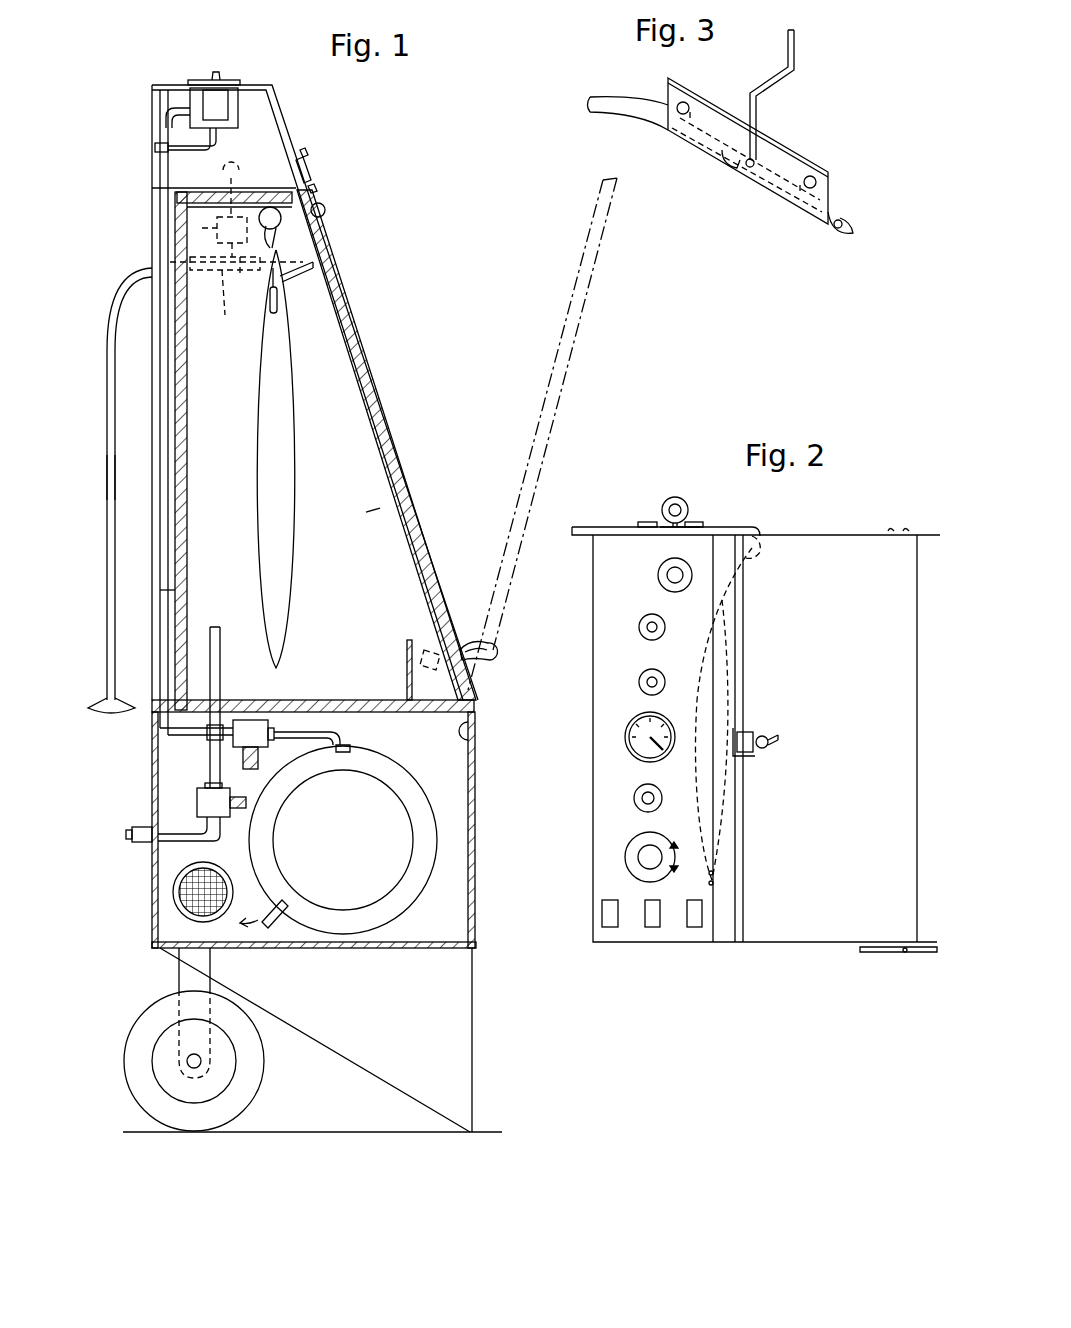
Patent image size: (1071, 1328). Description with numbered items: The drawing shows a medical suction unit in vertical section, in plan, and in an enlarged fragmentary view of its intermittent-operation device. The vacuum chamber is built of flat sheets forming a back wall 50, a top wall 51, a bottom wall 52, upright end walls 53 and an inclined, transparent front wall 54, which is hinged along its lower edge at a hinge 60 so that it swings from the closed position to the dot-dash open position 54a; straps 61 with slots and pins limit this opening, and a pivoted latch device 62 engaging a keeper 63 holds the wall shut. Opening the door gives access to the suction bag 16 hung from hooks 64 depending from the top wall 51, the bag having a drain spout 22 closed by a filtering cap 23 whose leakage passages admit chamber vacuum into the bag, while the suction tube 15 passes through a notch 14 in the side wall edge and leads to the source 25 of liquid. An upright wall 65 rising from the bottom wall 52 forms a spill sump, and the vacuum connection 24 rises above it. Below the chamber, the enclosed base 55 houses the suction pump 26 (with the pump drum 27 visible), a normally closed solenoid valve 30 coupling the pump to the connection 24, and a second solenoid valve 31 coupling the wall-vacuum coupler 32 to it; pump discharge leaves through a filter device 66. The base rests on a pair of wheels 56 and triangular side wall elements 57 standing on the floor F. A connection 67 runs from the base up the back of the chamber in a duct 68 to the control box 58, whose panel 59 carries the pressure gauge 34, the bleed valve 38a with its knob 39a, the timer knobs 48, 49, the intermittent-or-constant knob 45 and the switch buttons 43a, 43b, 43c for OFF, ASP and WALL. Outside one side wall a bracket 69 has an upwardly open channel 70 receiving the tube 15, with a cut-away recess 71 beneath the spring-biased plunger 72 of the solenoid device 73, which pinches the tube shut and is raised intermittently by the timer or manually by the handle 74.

In FIG. 1, the notch 14 is at (313, 267).
In FIG. 1, the suction tube 15 is at (115, 462).
In FIG. 2, the suction tube 15 is at (745, 530).
In FIG. 3, the suction tube 15 is at (633, 98).
In FIG. 1, the suction bag 16 is at (287, 460).
In FIG. 2, the suction bag 16 is at (730, 652).
In FIG. 2, the drain spout 22 is at (712, 873).
In FIG. 1, the cap 23 is at (280, 305).
In FIG. 2, the cap 23 is at (712, 883).
In FIG. 1, the vacuum connection 24 is at (222, 690).
In FIG. 1, the source of liquid 25 is at (112, 715).
In FIG. 1, the suction pump 26 is at (425, 840).
In FIG. 1, the drum 27 is at (437, 885).
In FIG. 1, the solenoid operated valve 30 is at (268, 747).
In FIG. 1, the solenoid operated valve 31 is at (197, 803).
In FIG. 1, the coupler 32 is at (140, 842).
In FIG. 1, the pressure gauge 34 is at (240, 118).
In FIG. 2, the pressure gauge 34 is at (628, 740).
In FIG. 1, the adjustable bleed valve 38a is at (222, 107).
In FIG. 1, the control knob 39a is at (220, 73).
In FIG. 2, the control knob 39a is at (635, 798).
In FIG. 2, the switch button 43a is at (695, 927).
In FIG. 2, the switch button 43b is at (652, 927).
In FIG. 2, the switch button 43c is at (610, 927).
In FIG. 2, the control knob 45 is at (640, 857).
In FIG. 2, the timer control knob 48 is at (640, 627).
In FIG. 2, the timer control knob 49 is at (640, 682).
In FIG. 1, the back wall 50 is at (176, 592).
In FIG. 1, the top wall 51 is at (200, 191).
In FIG. 1, the bottom wall 52 is at (370, 712).
In FIG. 1, the end wall 53 is at (373, 512).
In FIG. 1, the inclined front wall 54 is at (362, 356).
In FIG. 2, the inclined front wall 54 is at (812, 935).
In FIG. 1, the open position 54a is at (577, 352).
In FIG. 1, the base 55 is at (155, 892).
In FIG. 1, the wheel 56 is at (135, 1030).
In FIG. 1, the side wall element 57 is at (473, 1012).
In FIG. 1, the control box 58 is at (152, 100).
In FIG. 1, the top wall or panel 59 is at (176, 85).
In FIG. 2, the top wall or panel 59 is at (600, 880).
In FIG. 1, the hinge 60 is at (477, 748).
In FIG. 1, the strap 61 is at (470, 640).
In FIG. 2, the strap 61 is at (912, 532).
In FIG. 1, the latch device 62 is at (325, 210).
In FIG. 2, the latch device 62 is at (777, 740).
In FIG. 1, the keeper 63 is at (318, 173).
In FIG. 2, the keeper 63 is at (753, 752).
In FIG. 1, the hook 64 is at (282, 224).
In FIG. 1, the upright wall 65 is at (407, 660).
In FIG. 1, the filter device 66 is at (185, 905).
In FIG. 1, the connection 67 is at (185, 735).
In FIG. 1, the duct 68 is at (152, 402).
In FIG. 1, the bracket 69 is at (215, 270).
In FIG. 3, the bracket 69 is at (785, 145).
In FIG. 1, the channel 70 is at (222, 292).
In FIG. 2, the channel 70 is at (650, 523).
In FIG. 3, the channel 70 is at (838, 240).
In FIG. 1, the recess 71 is at (238, 270).
In FIG. 3, the recess 71 is at (751, 192).
In FIG. 1, the plunger 72 is at (190, 262).
In FIG. 2, the plunger 72 is at (690, 510).
In FIG. 3, the plunger 72 is at (790, 68).
In FIG. 1, the solenoid device 73 is at (217, 228).
In FIG. 2, the solenoid device 73 is at (683, 503).
In FIG. 1, the handle 74 is at (235, 175).
In FIG. 1, the floor F is at (310, 1132).